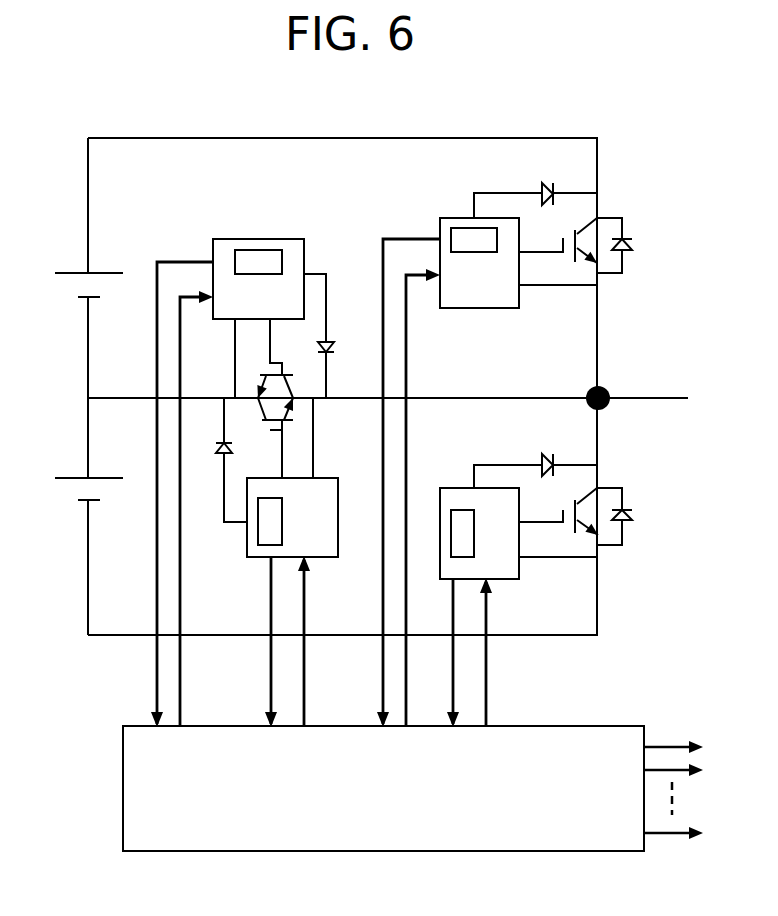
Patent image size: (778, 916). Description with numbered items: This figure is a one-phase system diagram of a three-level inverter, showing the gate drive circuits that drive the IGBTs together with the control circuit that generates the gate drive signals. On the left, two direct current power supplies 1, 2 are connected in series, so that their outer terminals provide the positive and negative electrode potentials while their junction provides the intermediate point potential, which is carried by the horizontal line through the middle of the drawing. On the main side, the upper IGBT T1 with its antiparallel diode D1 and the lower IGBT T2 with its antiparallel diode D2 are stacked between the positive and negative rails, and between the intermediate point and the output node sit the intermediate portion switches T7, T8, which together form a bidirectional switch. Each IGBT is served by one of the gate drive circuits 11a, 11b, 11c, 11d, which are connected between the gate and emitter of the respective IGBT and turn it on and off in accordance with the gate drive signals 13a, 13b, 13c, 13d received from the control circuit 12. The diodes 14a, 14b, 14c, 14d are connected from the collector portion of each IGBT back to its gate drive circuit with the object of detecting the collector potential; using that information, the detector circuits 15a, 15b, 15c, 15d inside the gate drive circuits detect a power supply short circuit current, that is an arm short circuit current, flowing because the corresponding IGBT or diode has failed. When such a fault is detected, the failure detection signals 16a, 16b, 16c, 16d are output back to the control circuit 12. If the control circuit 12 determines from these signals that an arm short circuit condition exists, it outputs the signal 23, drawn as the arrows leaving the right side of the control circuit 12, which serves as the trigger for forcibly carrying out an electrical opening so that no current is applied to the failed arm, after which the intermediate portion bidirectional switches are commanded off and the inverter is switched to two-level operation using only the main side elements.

The direct current power supply 1 is at (67, 298).
The direct current power supply 2 is at (61, 504).
The gate drive circuit 11a is at (460, 235).
The gate drive circuit 11b is at (470, 507).
The gate drive circuit 11c is at (258, 251).
The gate drive circuit 11d is at (308, 547).
The control circuit 12 is at (582, 722).
The gate drive signal 13a is at (408, 496).
The gate drive signal 13b is at (492, 666).
The gate drive signal 13c is at (182, 508).
The gate drive signal 13d is at (309, 655).
The diode 14a is at (535, 189).
The diode 14b is at (535, 459).
The diode 14c is at (337, 336).
The diode 14d is at (215, 460).
The detector circuit 15a is at (466, 240).
The detector circuit 15b is at (469, 527).
The detector circuit 15c is at (253, 259).
The detector circuit 15d is at (275, 508).
The failure detection signal 16a is at (403, 520).
The failure detection signal 16b is at (458, 675).
The failure detection signal 16c is at (178, 531).
The failure detection signal 16d is at (274, 663).
The signal 23 is at (665, 742).
The switching element (IGBT) T1 is at (558, 234).
The switching element (IGBT) T2 is at (558, 505).
The switching element T7 is at (288, 382).
The switching element T8 is at (260, 415).
The freewheeling diode D1 is at (627, 242).
The freewheeling diode D2 is at (625, 515).